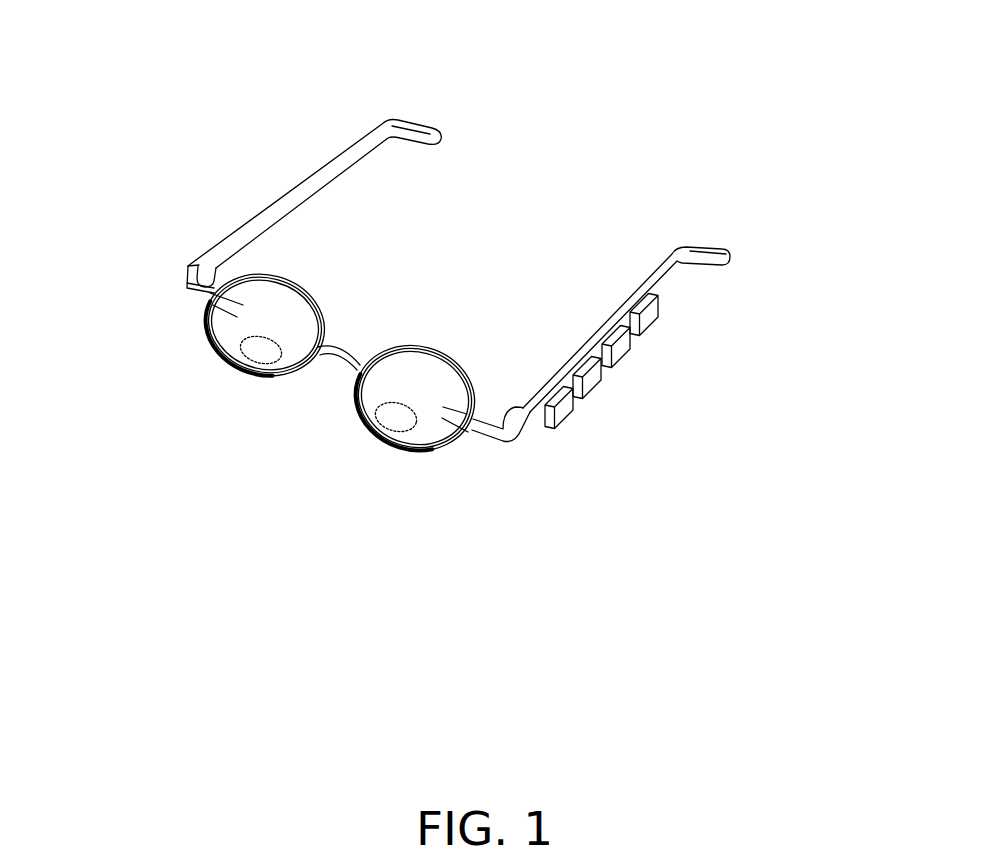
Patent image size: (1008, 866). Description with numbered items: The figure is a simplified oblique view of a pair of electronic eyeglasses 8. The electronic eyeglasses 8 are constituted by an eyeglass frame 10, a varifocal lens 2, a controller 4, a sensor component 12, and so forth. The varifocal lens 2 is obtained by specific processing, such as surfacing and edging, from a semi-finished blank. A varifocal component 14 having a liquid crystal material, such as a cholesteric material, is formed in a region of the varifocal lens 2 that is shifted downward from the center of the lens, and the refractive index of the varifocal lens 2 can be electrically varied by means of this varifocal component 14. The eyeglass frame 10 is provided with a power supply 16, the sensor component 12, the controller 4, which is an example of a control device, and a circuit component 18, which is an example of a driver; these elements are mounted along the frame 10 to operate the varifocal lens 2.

The electronic eyeglasses 8 is at (553, 110).
The varifocal lens 2 is at (442, 445).
The varifocal component 14 is at (370, 410).
The eyeglass frame 10 is at (680, 243).
The power supply 16 is at (565, 418).
The circuit component 18 is at (600, 384).
The sensor component 12 is at (629, 348).
The controller 4 is at (657, 314).